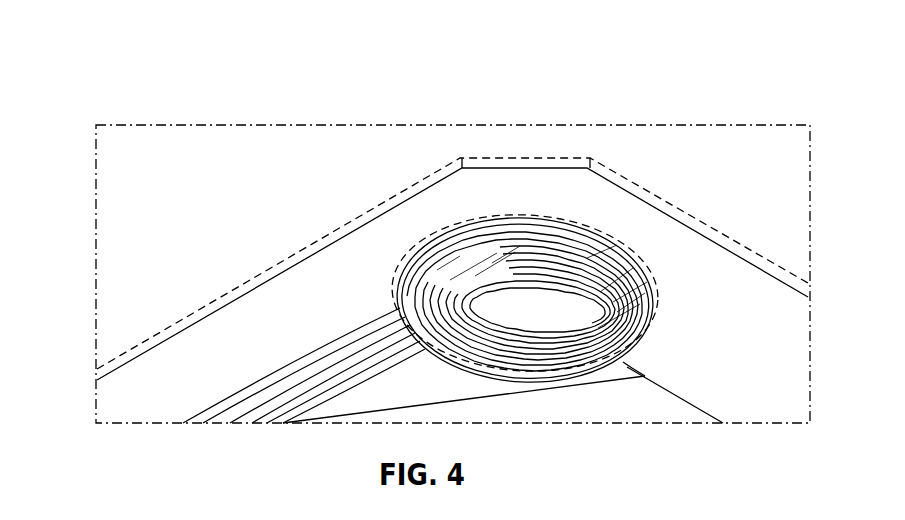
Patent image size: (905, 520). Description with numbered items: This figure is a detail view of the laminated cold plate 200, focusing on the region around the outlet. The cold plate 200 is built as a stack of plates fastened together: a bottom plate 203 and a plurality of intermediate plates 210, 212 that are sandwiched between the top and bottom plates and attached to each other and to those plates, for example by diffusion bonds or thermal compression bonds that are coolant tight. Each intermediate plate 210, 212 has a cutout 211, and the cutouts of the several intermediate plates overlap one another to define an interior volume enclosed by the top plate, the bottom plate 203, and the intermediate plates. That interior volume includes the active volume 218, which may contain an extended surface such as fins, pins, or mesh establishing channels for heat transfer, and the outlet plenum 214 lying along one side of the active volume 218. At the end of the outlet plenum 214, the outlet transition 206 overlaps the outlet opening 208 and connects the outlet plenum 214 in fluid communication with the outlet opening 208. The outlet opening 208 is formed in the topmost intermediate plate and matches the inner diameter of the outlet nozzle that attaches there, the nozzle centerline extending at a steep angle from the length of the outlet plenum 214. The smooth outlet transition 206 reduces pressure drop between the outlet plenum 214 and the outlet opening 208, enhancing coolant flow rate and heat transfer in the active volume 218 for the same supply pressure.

The cold plate 200 is at (127, 91).
The bottom plate 203 is at (483, 357).
The outlet transition 206 is at (436, 258).
The outlet opening 208 is at (543, 222).
The intermediate plate 210 is at (610, 283).
The cutout 211 is at (495, 278).
The intermediate plate 212 is at (425, 333).
The outlet plenum 214 is at (422, 398).
The active volume 218 is at (644, 415).